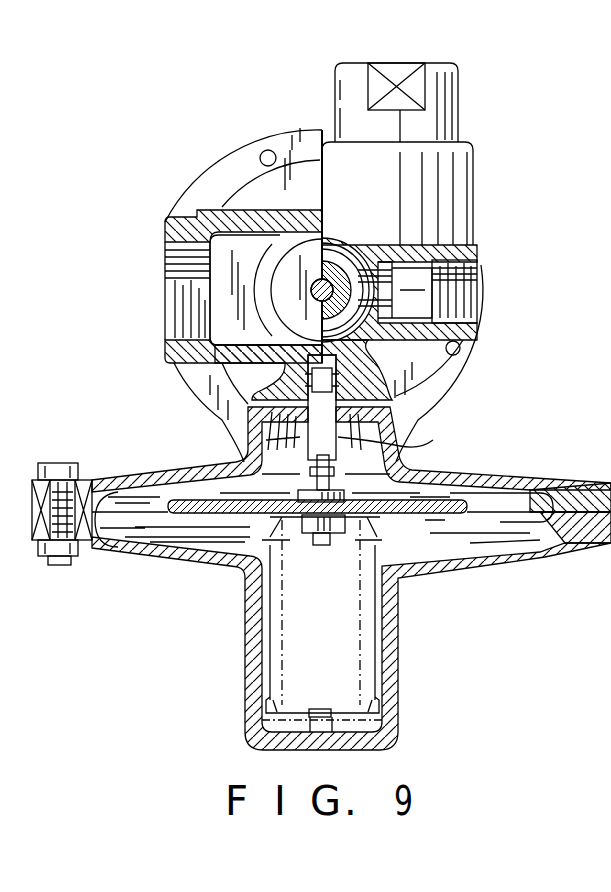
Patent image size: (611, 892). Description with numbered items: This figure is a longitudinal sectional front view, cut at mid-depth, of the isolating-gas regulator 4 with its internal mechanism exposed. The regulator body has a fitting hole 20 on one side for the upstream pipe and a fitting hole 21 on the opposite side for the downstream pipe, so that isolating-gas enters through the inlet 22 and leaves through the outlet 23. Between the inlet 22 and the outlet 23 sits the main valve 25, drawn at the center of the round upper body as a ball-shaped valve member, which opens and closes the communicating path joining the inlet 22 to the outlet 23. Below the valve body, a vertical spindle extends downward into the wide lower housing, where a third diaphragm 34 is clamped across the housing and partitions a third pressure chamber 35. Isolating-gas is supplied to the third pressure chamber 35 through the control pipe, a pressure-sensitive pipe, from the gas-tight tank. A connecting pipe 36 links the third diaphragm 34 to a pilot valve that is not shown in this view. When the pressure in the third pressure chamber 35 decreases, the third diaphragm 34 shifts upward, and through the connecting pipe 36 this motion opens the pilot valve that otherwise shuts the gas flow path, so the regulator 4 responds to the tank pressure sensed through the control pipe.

The isolating-gas regulator 4 is at (503, 357).
The fitting hole 20 is at (487, 294).
The fitting hole 21 is at (165, 262).
The inlet 22 is at (405, 268).
The outlet 23 is at (172, 310).
The main valve 25 is at (345, 262).
The third diaphragm 34 is at (492, 515).
The third pressure chamber 35 is at (250, 439).
The connecting pipe 36 is at (432, 432).